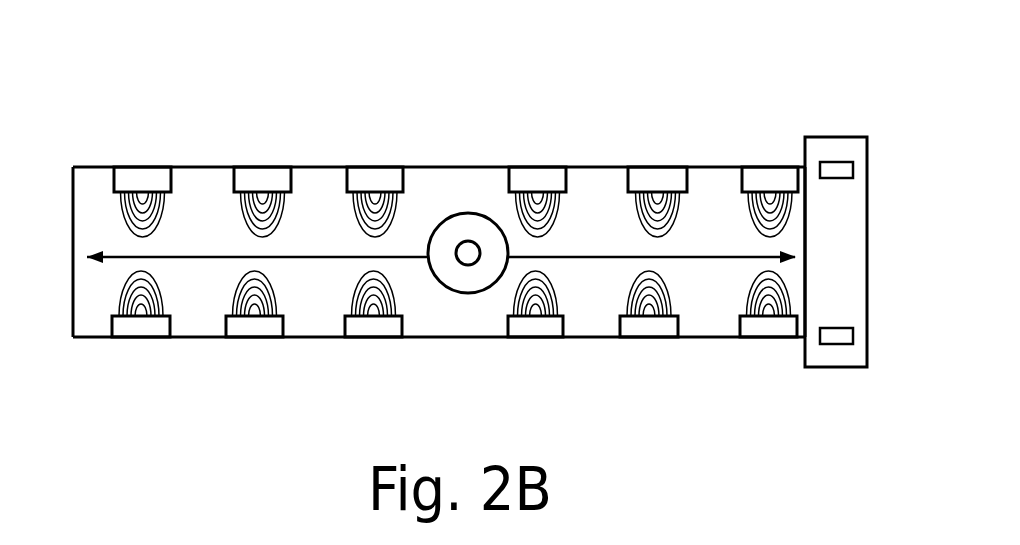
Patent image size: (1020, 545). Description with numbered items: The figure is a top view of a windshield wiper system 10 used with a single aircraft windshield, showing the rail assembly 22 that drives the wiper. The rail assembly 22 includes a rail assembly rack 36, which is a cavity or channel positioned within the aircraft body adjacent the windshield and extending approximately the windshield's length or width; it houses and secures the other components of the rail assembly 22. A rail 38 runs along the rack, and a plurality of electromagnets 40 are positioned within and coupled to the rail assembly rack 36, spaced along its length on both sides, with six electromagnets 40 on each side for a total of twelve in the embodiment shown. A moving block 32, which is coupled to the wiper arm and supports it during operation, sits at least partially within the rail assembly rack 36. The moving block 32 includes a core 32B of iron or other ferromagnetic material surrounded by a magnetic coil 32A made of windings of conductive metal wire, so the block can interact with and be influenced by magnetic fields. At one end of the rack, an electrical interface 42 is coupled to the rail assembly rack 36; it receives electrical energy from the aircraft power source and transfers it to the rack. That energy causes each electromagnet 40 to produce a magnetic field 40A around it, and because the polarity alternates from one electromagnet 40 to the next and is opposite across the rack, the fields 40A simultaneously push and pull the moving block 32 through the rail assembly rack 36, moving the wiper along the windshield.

The system 10 is at (670, 385).
The rail assembly 22 is at (240, 144).
The moving block 32 is at (448, 236).
The magnetic coil 32A is at (481, 214).
The core 32B is at (461, 237).
The rail assembly rack 36 is at (185, 339).
The rail 38 is at (597, 259).
The plurality of electromagnets 40 is at (548, 176).
The magnetic field 40A is at (356, 306).
The electrical interface 42 is at (835, 137).